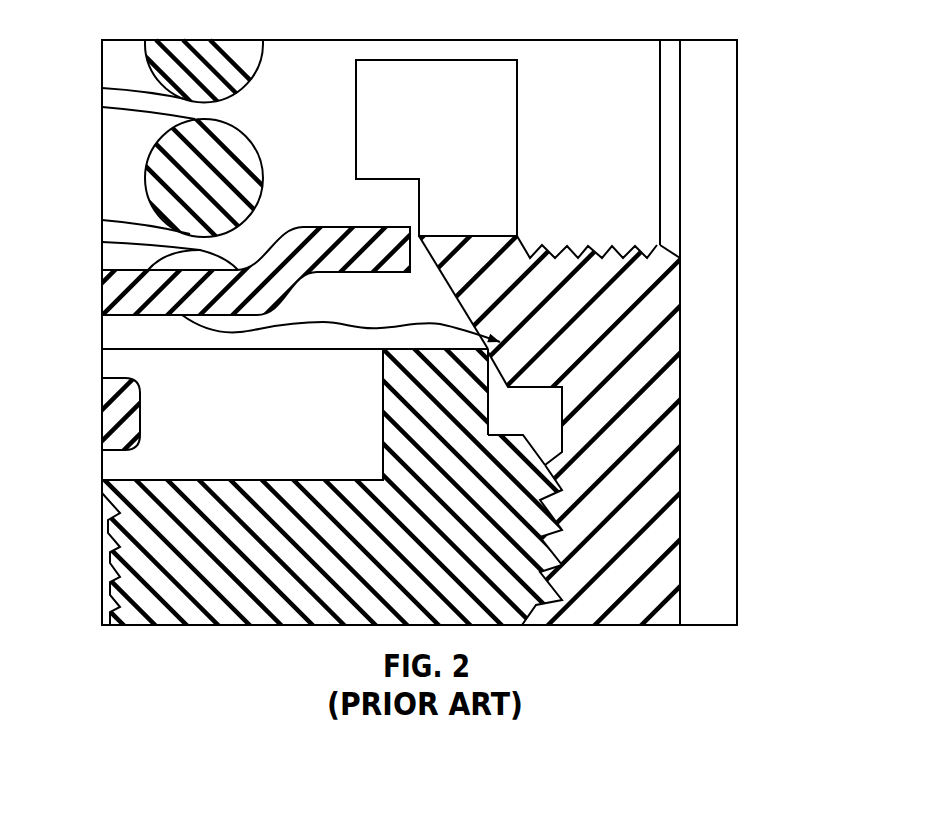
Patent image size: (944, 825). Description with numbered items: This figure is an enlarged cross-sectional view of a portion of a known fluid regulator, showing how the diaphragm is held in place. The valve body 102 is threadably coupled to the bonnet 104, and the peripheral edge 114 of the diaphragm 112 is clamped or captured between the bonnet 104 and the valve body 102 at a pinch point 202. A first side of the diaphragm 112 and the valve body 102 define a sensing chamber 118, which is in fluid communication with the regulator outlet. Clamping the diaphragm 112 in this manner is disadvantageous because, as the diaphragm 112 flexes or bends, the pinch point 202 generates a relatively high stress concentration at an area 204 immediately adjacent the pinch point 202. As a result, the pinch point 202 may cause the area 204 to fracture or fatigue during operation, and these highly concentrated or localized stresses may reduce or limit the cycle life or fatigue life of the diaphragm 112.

The valve body 102 is at (153, 558).
The bonnet 104 is at (633, 496).
The diaphragm 112 is at (380, 330).
The peripheral edge 114 is at (494, 344).
The sensing chamber 118 is at (312, 450).
The pinch point 202 is at (492, 342).
The area 204 is at (471, 322).